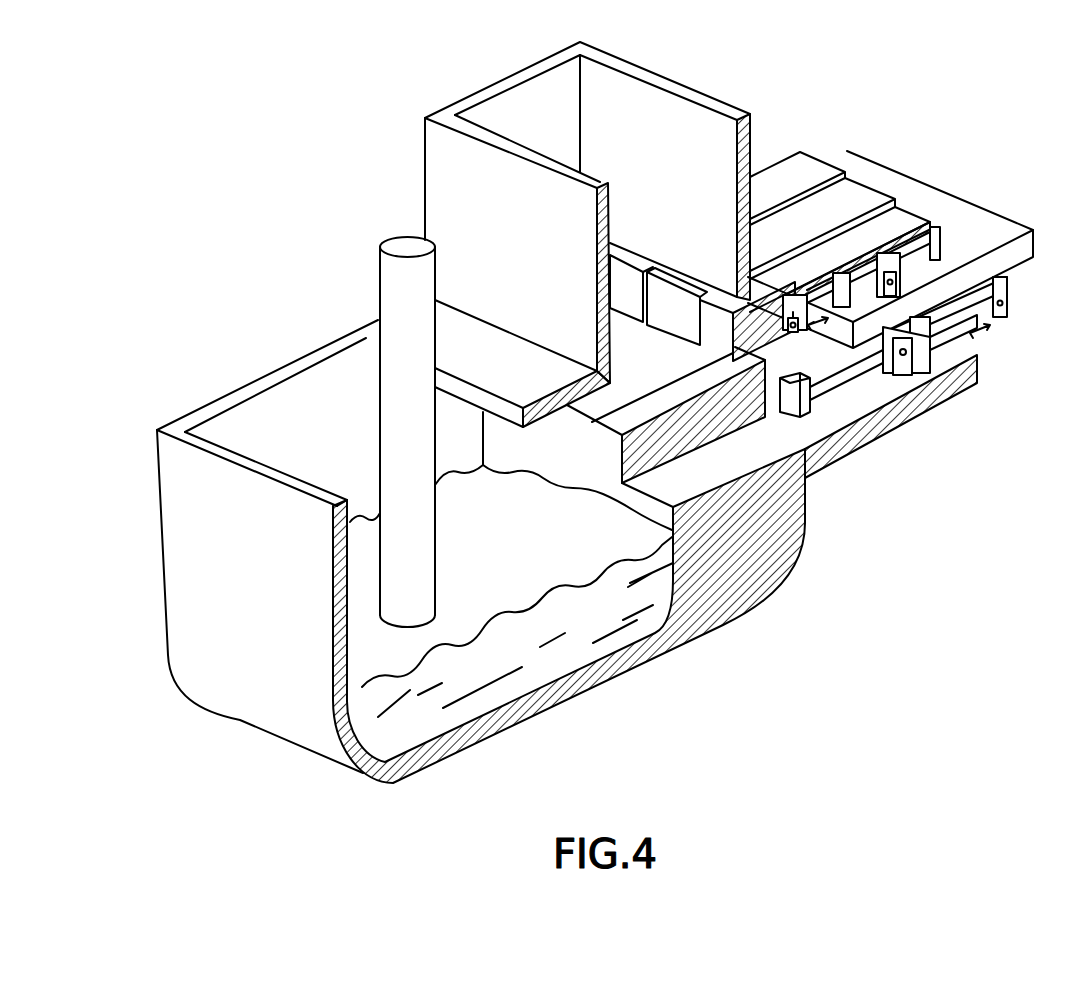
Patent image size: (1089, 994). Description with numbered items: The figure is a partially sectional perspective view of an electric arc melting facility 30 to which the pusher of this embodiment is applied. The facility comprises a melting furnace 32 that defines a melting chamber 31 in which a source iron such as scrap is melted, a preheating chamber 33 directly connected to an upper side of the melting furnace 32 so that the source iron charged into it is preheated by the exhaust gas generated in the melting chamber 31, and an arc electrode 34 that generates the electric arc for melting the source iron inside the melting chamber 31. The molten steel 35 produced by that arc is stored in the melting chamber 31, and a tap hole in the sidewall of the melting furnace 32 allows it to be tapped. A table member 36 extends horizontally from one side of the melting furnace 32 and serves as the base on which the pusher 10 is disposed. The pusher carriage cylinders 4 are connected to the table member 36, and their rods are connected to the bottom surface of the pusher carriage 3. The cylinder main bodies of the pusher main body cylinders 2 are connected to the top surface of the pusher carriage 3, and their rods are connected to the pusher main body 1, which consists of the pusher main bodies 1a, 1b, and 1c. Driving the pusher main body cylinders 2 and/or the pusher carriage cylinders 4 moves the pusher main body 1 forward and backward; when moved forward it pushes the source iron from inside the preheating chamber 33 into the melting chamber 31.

The pusher main body 1 is at (853, 127).
The pusher main body 1a is at (779, 182).
The pusher main body 1b is at (868, 192).
The pusher main body 1c is at (917, 212).
The pusher main body cylinder 2 is at (955, 233).
The pusher carriage 3 is at (1020, 263).
The pusher carriage cylinder 4 is at (867, 385).
The pusher 10 is at (1003, 106).
The electric arc melting facility 30 is at (165, 246).
The melting chamber 31 is at (285, 421).
The melting furnace 32 is at (190, 562).
The preheating chamber 33 is at (692, 116).
The arc electrode 34 is at (395, 304).
The molten steel 35 is at (607, 612).
The table member 36 is at (958, 386).